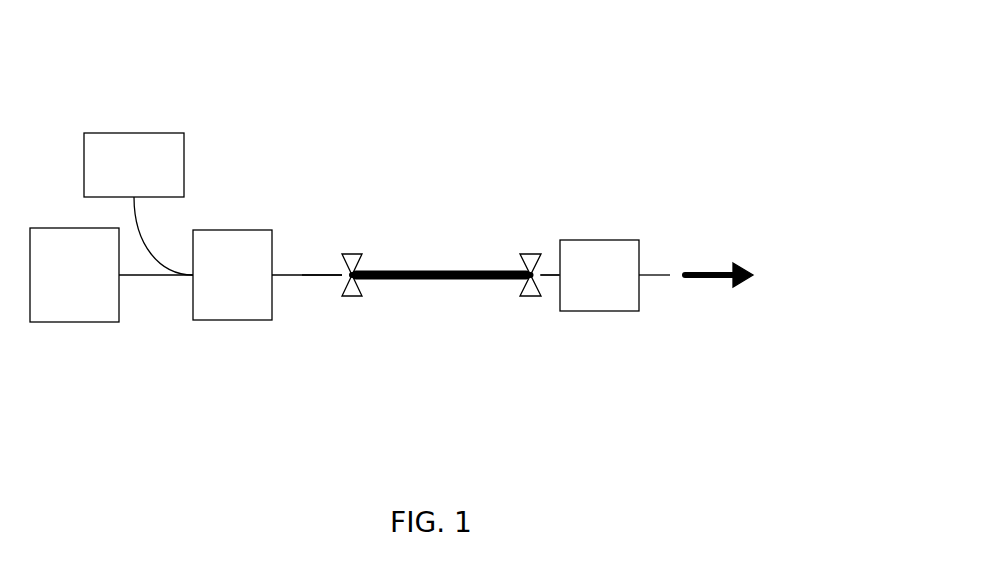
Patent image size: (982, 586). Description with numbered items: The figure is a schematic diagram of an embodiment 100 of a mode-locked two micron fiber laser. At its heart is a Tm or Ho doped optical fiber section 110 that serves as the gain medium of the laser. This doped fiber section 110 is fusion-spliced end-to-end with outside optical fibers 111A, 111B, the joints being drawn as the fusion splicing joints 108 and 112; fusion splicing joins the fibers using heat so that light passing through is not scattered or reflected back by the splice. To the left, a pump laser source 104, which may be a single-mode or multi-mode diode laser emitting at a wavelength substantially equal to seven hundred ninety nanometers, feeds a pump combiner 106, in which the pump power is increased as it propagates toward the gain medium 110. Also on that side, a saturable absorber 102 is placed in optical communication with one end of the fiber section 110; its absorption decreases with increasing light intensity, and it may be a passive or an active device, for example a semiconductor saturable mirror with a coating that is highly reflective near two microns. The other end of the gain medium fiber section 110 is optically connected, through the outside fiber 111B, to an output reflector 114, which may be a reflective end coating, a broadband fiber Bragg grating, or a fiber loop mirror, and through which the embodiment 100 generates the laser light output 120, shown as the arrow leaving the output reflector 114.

The embodiment of the mode-locked 2 micron fiber laser 100 is at (600, 52).
The saturable absorber 102 is at (97, 278).
The pump laser source 104 is at (156, 172).
The pump combiner 106 is at (254, 278).
The fusion splicing joint 108 is at (356, 252).
The Tm or Ho doped optical fiber section 110 is at (435, 282).
The outside optical fiber 111A is at (318, 280).
The outside optical fiber 111B is at (550, 270).
The fusion splicing joint 112 is at (530, 253).
The output reflector 114 is at (622, 288).
The laser light output 120 is at (708, 267).